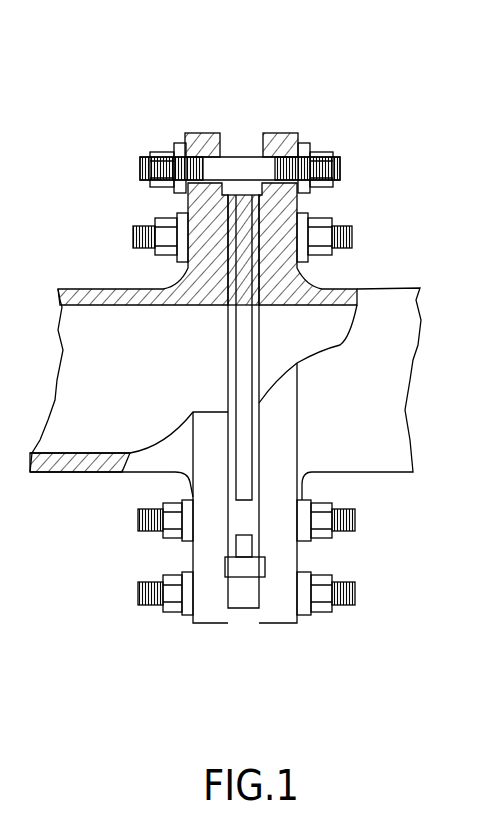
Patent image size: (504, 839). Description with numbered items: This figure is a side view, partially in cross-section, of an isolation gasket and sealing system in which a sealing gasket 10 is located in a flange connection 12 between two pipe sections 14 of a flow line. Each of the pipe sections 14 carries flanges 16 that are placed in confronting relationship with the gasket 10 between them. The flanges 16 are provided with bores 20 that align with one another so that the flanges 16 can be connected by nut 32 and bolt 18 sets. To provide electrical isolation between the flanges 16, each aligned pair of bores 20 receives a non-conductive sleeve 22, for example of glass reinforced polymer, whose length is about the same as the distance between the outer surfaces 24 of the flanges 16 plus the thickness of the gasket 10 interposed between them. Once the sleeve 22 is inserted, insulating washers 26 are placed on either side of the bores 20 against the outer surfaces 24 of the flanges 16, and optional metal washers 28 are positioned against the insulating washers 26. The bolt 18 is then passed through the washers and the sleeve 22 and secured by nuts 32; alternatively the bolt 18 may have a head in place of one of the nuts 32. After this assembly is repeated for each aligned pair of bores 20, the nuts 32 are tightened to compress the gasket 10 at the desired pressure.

The sealing gasket 10 is at (240, 463).
The flange connection 12 is at (262, 82).
The pipe sections 14 is at (82, 289).
The flanges 16 is at (212, 552).
The bolt 18 is at (378, 163).
The bores 20 is at (202, 132).
The non-conductive sleeve 22 is at (238, 157).
The outer surfaces 24 is at (185, 203).
The insulating washers 26 is at (182, 146).
The metal washers 28 is at (158, 150).
The nuts 32 is at (160, 572).